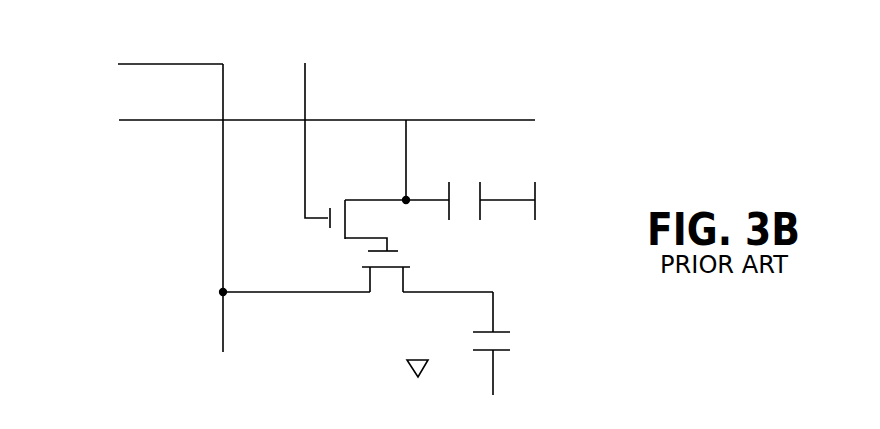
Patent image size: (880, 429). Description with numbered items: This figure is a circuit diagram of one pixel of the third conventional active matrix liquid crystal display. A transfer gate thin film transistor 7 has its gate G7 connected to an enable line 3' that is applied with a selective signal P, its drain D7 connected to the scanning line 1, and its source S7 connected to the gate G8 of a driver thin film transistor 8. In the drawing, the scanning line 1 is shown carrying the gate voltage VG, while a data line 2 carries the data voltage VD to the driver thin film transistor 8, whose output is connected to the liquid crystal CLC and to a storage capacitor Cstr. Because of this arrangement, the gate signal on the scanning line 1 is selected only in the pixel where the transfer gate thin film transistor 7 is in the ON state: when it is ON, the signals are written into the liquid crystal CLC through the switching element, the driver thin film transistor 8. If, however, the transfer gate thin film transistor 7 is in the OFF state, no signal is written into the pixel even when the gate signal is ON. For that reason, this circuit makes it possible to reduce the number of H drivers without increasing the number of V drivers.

The scanning line 1 is at (495, 120).
The data line 2 is at (223, 150).
The enable line 3' is at (327, 140).
The transfer gate thin film transistor 7 is at (305, 155).
The driver thin film transistor 8 is at (387, 288).
The gate G7 is at (325, 223).
The drain D7 is at (366, 200).
The source S7 is at (358, 246).
The gate G8 is at (398, 250).
The storage capacitor Cstr is at (482, 194).
The liquid crystal CLC is at (512, 342).
The data voltage VD is at (150, 66).
The gate voltage VG is at (93, 123).
The selective signal P is at (305, 50).